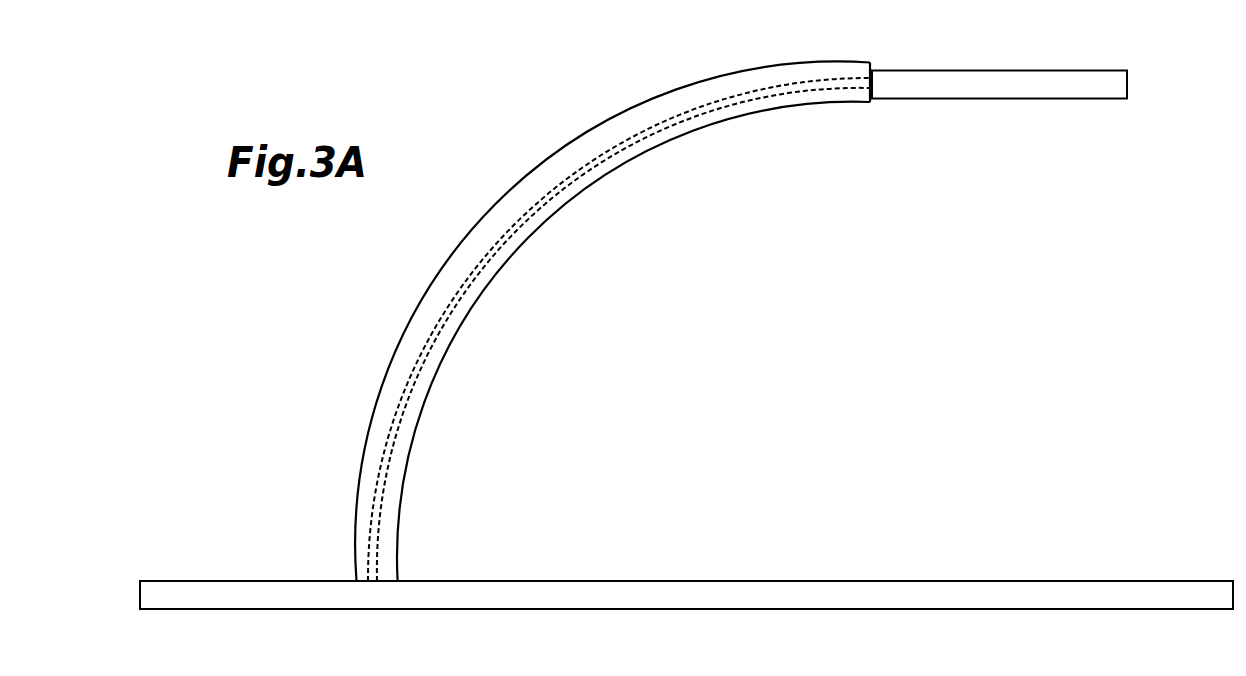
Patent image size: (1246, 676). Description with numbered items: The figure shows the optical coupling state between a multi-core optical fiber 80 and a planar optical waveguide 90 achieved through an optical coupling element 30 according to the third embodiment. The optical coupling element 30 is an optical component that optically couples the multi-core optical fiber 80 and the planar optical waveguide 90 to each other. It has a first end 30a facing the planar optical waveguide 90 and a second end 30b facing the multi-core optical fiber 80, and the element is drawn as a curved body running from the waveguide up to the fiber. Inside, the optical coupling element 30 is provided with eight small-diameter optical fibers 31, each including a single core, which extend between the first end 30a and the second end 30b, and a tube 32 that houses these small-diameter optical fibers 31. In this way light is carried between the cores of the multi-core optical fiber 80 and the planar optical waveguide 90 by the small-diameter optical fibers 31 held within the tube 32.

The optical coupling element 30 is at (639, 300).
The first end 30a is at (385, 581).
The second end 30b is at (873, 83).
The small-diameter optical fibers 31 is at (575, 175).
The tube 32 is at (513, 187).
The multi-core optical fiber 80 is at (1040, 78).
The planar optical waveguide 90 is at (955, 610).